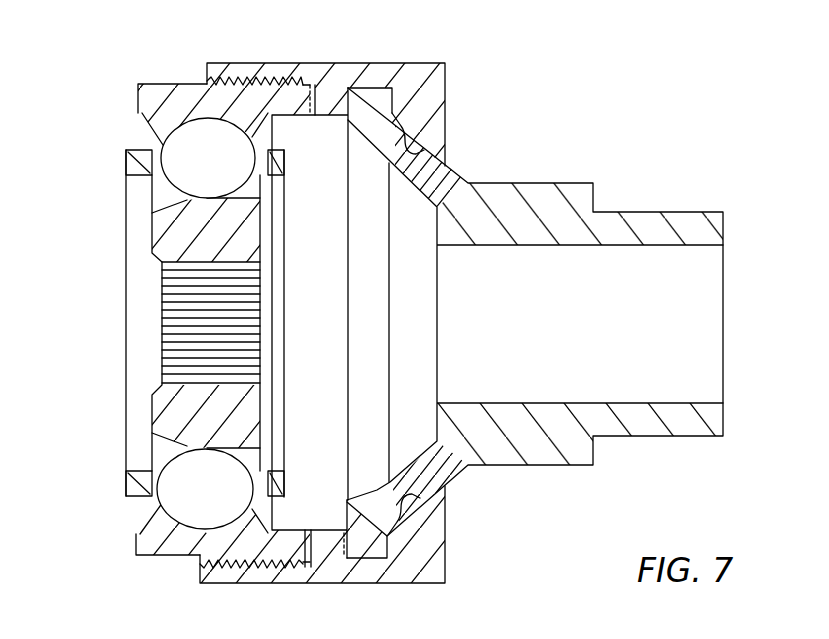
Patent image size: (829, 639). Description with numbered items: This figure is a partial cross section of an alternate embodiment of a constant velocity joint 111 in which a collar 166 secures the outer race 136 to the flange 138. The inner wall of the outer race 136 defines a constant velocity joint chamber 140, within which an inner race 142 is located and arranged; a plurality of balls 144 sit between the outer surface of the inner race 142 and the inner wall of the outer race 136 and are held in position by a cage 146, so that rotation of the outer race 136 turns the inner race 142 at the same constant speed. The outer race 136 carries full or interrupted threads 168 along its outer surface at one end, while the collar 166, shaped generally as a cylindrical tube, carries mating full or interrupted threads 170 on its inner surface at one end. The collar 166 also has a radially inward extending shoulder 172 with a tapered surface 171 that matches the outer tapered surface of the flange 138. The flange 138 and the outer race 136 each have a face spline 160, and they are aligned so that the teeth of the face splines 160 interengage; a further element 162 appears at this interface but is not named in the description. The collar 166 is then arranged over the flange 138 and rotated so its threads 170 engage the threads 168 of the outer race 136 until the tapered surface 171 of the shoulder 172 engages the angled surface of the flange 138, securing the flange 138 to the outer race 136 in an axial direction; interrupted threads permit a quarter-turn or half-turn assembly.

The constant velocity joint 111 is at (60, 260).
The outer race 136 is at (142, 90).
The flange 138 is at (535, 312).
The constant velocity joint chamber 140 is at (322, 333).
The inner race 142 is at (160, 410).
The balls 144 is at (185, 497).
The cage 146 is at (140, 484).
The face spline 160 is at (328, 545).
The pin 162 is at (328, 100).
The collar 166 is at (357, 308).
The threads 168 is at (233, 560).
The threads 170 is at (240, 78).
The tapered surface 171 is at (433, 150).
The radially inward extending shoulder 172 is at (438, 78).